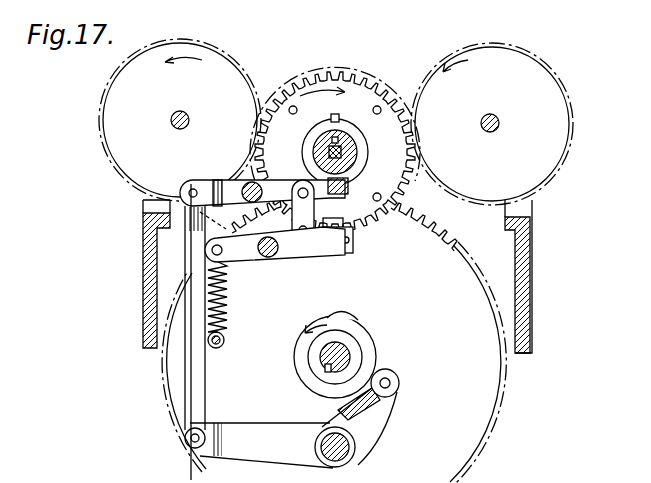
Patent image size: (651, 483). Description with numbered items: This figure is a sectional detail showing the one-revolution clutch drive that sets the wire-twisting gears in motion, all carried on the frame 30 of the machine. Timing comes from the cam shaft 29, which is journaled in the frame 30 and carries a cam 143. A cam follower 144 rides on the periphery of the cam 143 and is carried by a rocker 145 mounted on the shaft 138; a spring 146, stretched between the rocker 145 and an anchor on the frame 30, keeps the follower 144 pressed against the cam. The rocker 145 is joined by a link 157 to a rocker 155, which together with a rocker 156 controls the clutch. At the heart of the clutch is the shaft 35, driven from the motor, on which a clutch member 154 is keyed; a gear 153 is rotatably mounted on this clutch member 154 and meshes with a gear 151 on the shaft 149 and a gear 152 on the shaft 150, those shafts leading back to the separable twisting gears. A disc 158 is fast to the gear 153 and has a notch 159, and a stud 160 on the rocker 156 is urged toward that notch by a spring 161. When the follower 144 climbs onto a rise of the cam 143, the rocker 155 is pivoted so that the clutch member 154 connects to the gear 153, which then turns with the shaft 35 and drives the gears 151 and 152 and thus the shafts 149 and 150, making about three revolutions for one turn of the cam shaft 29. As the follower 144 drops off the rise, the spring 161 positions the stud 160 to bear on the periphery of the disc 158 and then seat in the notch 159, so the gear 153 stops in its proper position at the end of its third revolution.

The shaft 149 is at (187, 114).
The gear 151 is at (171, 120).
The disc 158 is at (335, 145).
The clutch member 154 is at (340, 140).
The shaft 35 is at (348, 155).
The rocker 155 is at (294, 165).
The notch 159 is at (330, 218).
The gear 153 is at (405, 214).
The stud 160 is at (333, 252).
The rocker 156 is at (280, 262).
The spring 161 is at (228, 308).
The link 157 is at (200, 373).
The cam 143 is at (347, 346).
The cam shaft 29 is at (345, 353).
The cam follower 144 is at (399, 380).
The rocker 145 is at (372, 431).
The shaft 138 is at (350, 461).
The spring 146 is at (184, 468).
The shaft 150 is at (499, 121).
The gear 152 is at (508, 124).
The frame 30 is at (530, 336).